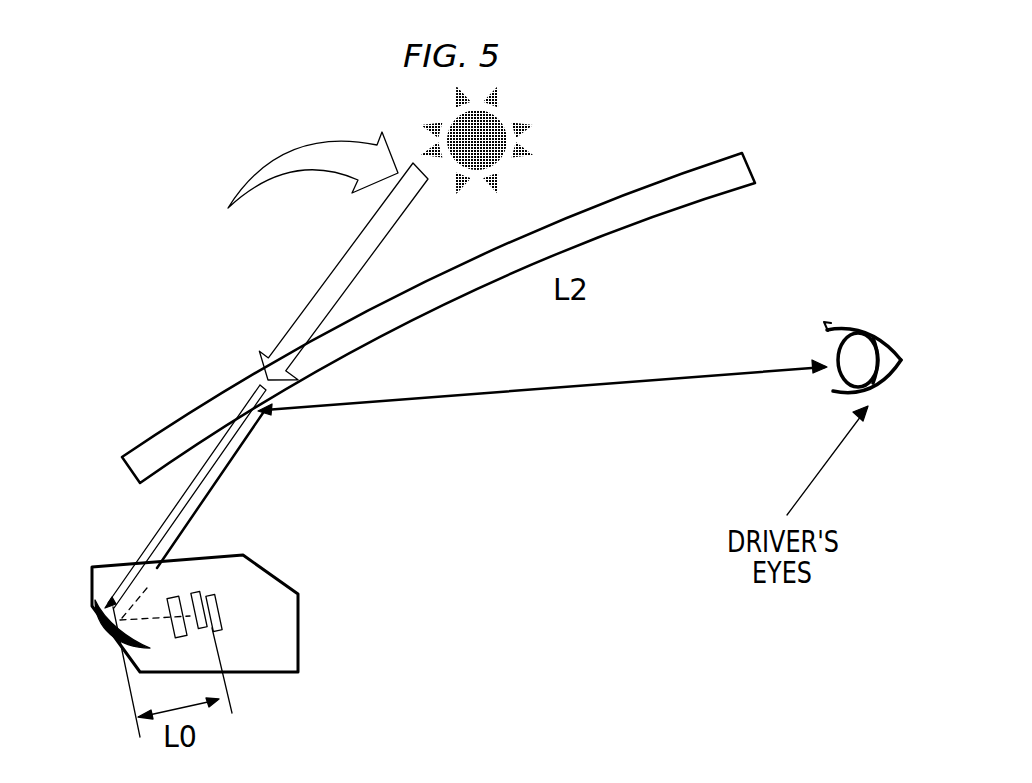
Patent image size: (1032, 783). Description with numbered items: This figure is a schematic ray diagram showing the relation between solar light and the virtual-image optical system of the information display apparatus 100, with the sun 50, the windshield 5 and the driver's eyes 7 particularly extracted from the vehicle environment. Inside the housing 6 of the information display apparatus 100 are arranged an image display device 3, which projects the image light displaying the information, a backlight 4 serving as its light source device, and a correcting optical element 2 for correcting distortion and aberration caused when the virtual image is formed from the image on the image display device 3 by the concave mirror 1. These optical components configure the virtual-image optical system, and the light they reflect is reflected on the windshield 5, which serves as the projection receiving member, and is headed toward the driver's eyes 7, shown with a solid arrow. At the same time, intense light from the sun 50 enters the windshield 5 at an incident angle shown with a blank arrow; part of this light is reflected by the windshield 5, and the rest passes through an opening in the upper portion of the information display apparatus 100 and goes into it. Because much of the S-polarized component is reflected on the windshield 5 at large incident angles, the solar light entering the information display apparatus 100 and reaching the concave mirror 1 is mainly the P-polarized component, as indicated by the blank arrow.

The concave mirror 1 is at (103, 618).
The correcting optical element 2 is at (179, 598).
The image display device 3 is at (200, 594).
The backlight 4 is at (221, 632).
The windshield 5 is at (682, 195).
The housing 6 is at (278, 633).
The driver's eyes 7 is at (846, 327).
The sun 50 is at (505, 143).
The information display apparatus 100 is at (300, 598).